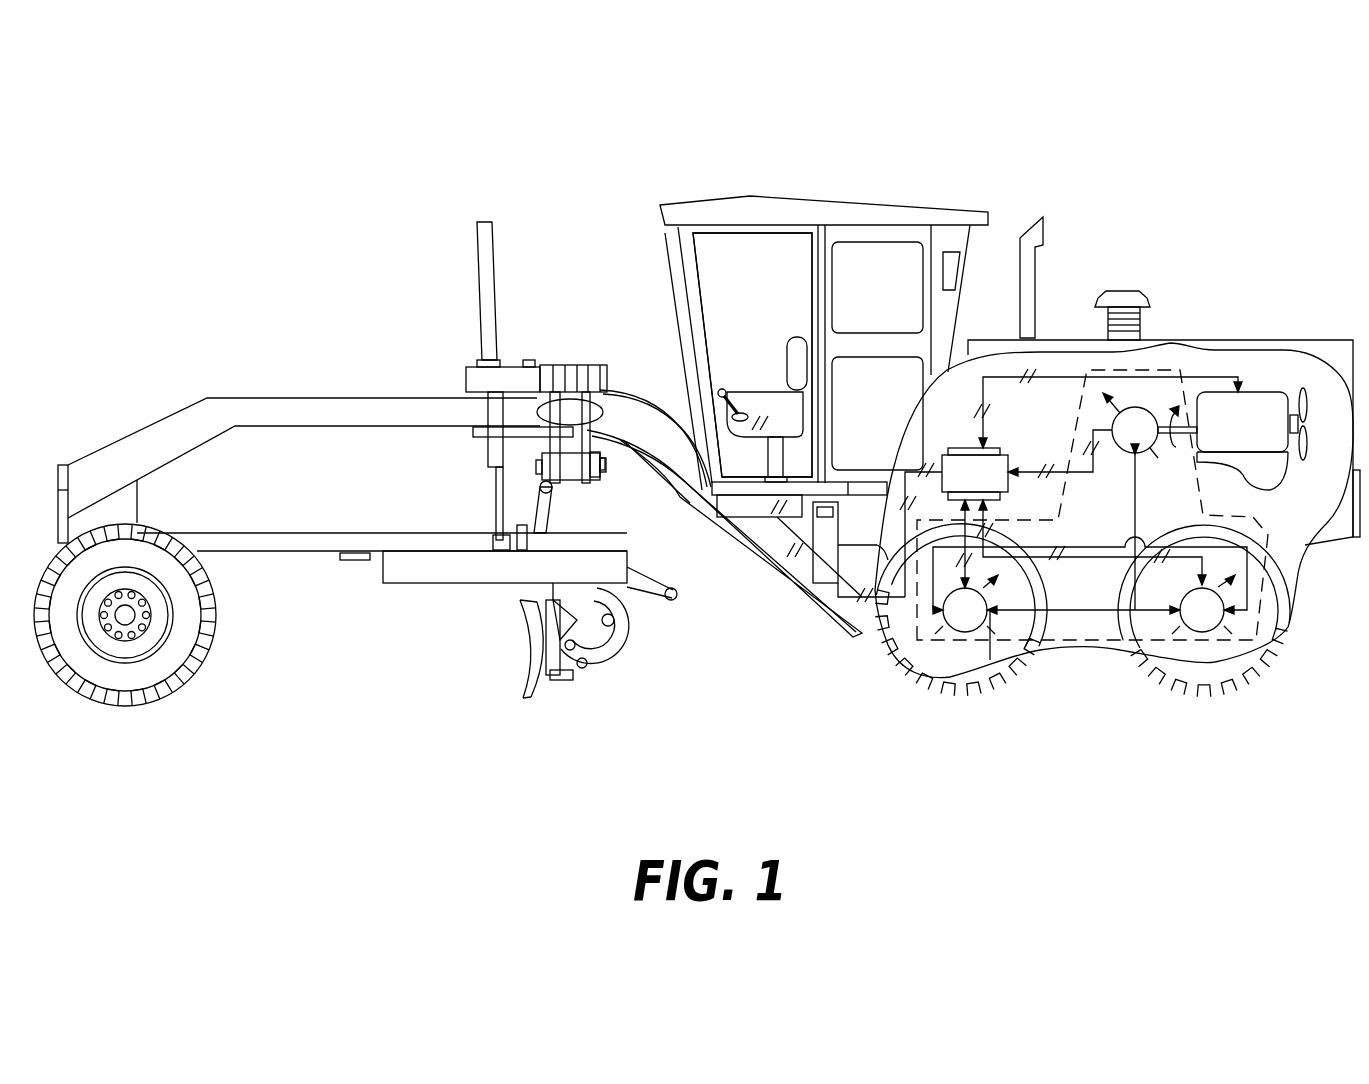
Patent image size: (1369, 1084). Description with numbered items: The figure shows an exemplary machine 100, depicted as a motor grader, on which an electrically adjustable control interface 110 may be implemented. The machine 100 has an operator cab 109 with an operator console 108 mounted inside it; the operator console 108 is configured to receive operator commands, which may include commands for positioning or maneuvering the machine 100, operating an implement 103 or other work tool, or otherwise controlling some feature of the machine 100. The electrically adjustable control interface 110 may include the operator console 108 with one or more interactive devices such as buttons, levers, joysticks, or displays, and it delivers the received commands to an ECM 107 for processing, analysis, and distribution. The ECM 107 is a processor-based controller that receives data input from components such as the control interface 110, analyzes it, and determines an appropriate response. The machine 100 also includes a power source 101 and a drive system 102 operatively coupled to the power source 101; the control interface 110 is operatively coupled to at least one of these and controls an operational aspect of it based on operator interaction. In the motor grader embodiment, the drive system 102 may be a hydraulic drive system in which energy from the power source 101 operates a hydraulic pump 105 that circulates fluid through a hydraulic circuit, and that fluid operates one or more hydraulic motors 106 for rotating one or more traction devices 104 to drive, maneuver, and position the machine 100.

The machine 100 is at (586, 193).
The power source 101 is at (1258, 402).
The drive system 102 is at (1143, 370).
The implement 103 is at (607, 652).
The traction devices 104 is at (962, 700).
The hydraulic pump 105 is at (1122, 452).
The hydraulic motors 106 is at (993, 675).
The ECM 107 is at (953, 452).
The operator console 108 is at (790, 347).
The operator cab 109 is at (739, 316).
The electrically adjustable control interface 110 is at (780, 390).